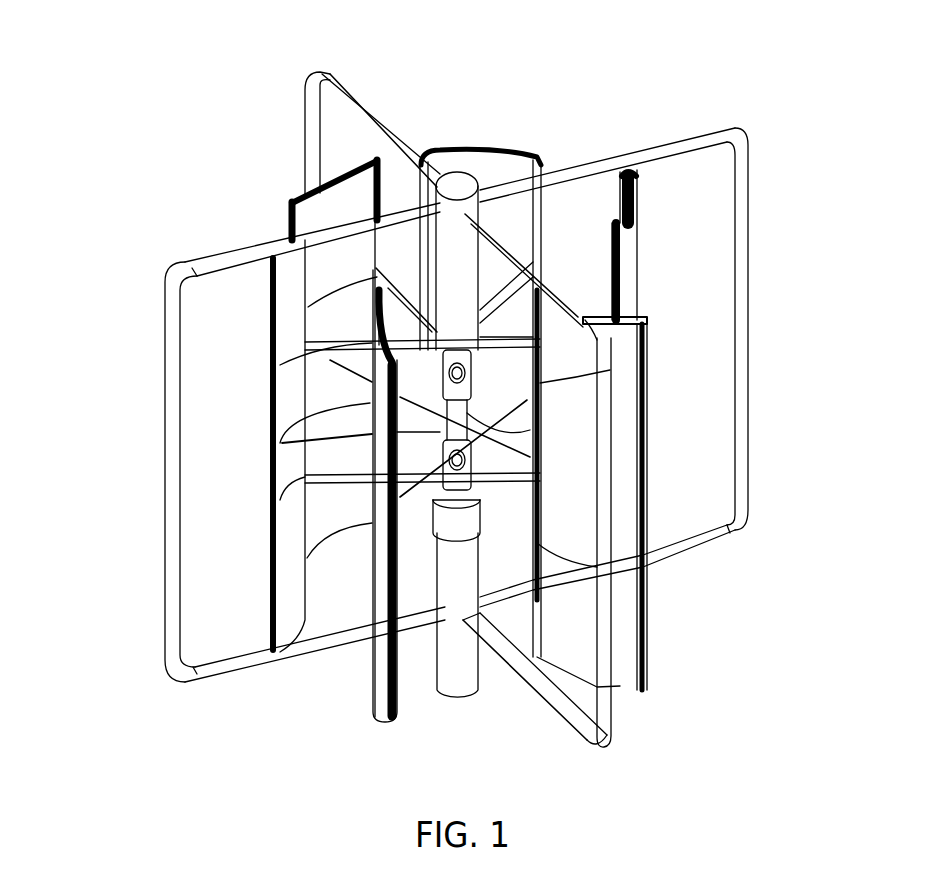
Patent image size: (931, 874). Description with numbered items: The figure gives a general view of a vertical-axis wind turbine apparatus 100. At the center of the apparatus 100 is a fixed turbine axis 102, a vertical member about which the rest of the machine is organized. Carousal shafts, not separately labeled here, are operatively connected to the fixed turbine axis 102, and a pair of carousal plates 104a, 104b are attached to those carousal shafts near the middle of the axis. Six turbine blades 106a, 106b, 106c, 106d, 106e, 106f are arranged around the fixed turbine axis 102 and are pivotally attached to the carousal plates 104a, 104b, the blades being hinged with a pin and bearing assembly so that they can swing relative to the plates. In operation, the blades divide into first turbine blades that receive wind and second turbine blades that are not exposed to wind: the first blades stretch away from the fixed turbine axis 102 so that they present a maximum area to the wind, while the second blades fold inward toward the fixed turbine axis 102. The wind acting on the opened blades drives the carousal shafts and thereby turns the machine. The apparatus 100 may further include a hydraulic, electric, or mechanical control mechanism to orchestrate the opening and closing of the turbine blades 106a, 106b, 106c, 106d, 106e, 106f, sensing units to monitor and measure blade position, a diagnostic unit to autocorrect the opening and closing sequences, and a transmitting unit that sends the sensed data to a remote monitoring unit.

The apparatus 100 is at (190, 121).
The fixed turbine axis 102 is at (460, 265).
The carousal plate 104a is at (503, 389).
The carousal plate 104b is at (503, 455).
The turbine blade 106a is at (492, 153).
The turbine blade 106b is at (630, 248).
The turbine blade 106c is at (630, 618).
The turbine blade 106d is at (373, 667).
The turbine blade 106e is at (288, 387).
The turbine blade 106f is at (318, 200).